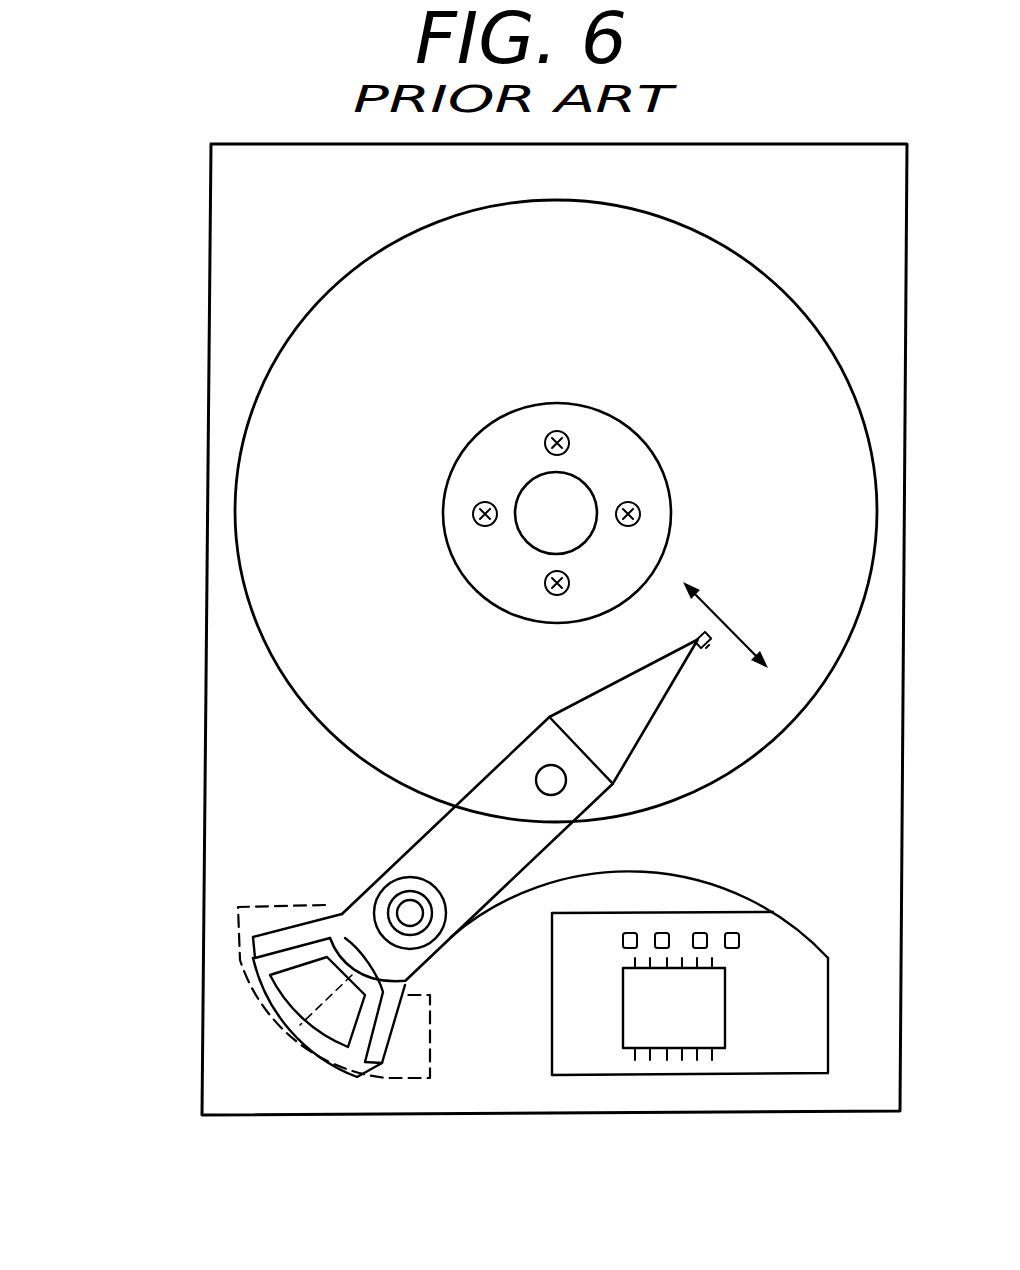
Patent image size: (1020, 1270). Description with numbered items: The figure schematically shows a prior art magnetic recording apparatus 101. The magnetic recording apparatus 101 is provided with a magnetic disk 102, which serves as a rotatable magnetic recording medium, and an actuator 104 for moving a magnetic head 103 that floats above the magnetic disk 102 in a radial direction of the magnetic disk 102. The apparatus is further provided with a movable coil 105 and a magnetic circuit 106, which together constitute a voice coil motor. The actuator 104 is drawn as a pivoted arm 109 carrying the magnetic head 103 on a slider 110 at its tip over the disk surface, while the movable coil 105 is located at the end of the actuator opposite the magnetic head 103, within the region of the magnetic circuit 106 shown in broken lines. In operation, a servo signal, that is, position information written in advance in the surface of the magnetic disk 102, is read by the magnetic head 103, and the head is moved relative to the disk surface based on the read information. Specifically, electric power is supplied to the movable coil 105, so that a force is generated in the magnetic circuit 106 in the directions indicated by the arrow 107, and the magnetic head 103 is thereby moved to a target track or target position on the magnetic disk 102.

The magnetic recording apparatus 101 is at (181, 427).
The magnetic disk 102 is at (723, 277).
The magnetic head 103 is at (707, 655).
The actuator 104 is at (479, 855).
The movable coil 105 is at (262, 995).
The magnetic circuit 106 is at (410, 1020).
The arrow 107 is at (723, 610).
The head arm 109 is at (608, 723).
The slider 110 is at (700, 633).